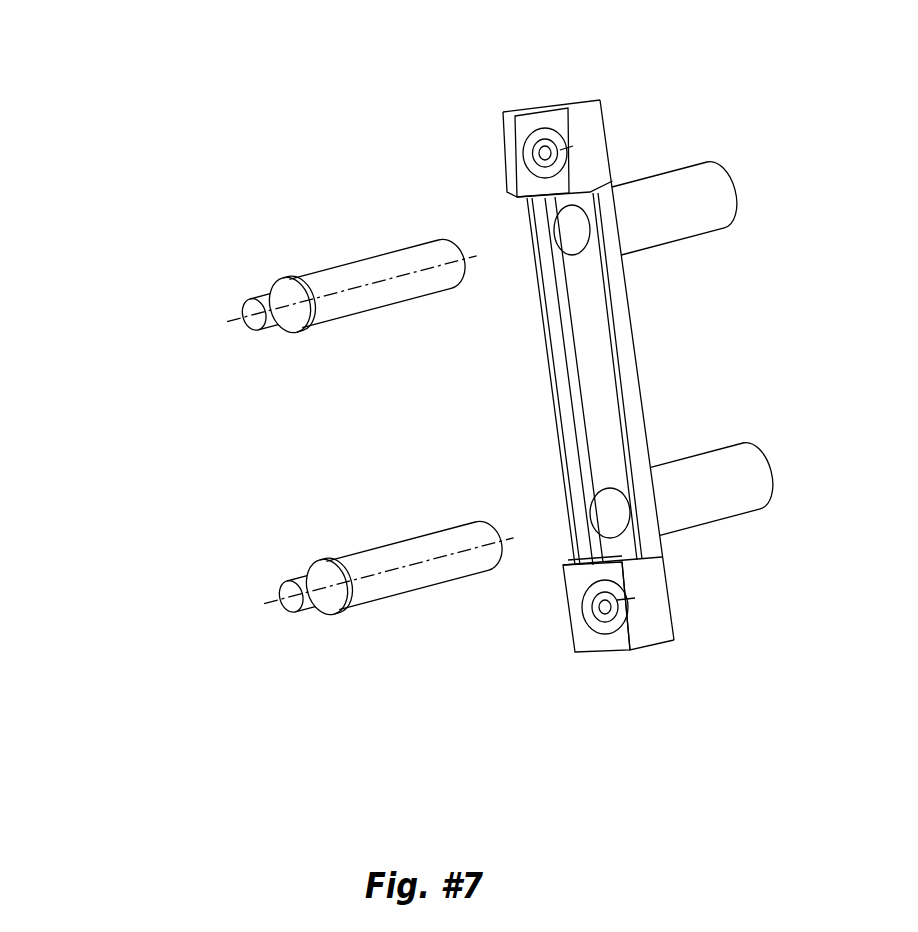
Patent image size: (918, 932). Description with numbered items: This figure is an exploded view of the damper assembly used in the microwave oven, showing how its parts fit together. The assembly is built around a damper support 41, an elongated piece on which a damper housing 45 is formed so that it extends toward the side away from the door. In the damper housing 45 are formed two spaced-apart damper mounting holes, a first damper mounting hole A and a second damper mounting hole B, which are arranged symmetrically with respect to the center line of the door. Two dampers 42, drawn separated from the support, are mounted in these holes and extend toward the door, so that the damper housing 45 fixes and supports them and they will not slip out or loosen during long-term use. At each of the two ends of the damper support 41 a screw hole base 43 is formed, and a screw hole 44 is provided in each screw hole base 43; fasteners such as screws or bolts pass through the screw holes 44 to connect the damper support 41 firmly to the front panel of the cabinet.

The damper support 41 is at (583, 397).
The dampers 42 is at (407, 550).
The screw hole bases 43 is at (575, 140).
The screw hole 44 is at (548, 153).
The damper housing 45 is at (707, 210).
The first damper mounting hole A is at (573, 230).
The second damper mounting hole B is at (612, 517).